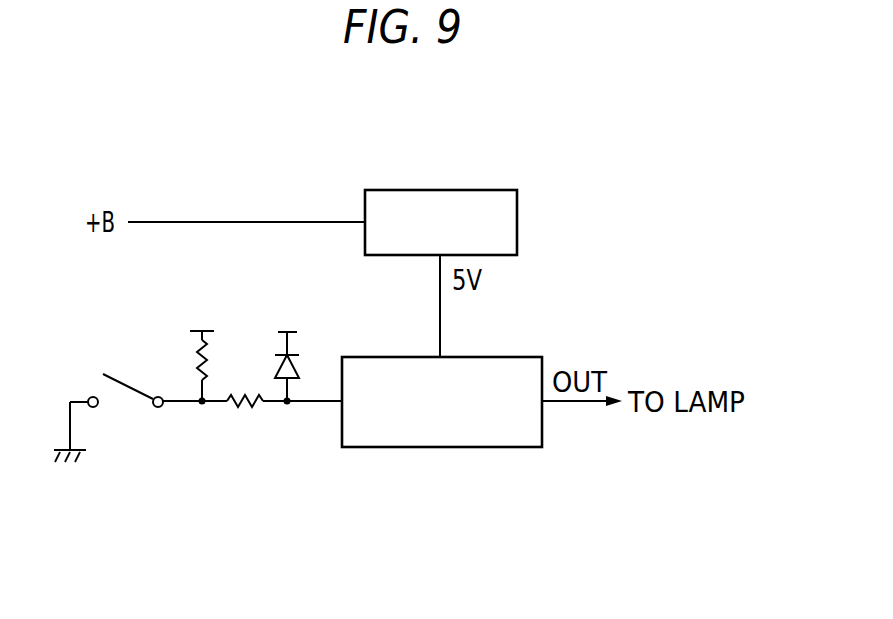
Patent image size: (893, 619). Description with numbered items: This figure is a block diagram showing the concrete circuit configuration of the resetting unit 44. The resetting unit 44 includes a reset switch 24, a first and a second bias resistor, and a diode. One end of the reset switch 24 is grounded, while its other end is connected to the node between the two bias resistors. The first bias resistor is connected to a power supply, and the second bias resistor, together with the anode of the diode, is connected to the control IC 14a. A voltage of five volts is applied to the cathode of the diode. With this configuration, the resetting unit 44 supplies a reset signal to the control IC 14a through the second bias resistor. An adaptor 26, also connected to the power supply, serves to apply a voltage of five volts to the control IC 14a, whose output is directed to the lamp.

The adaptor 26 is at (493, 190).
The control IC 14a is at (527, 357).
The reset switch 24 is at (130, 378).
The resetting unit 44 is at (198, 426).